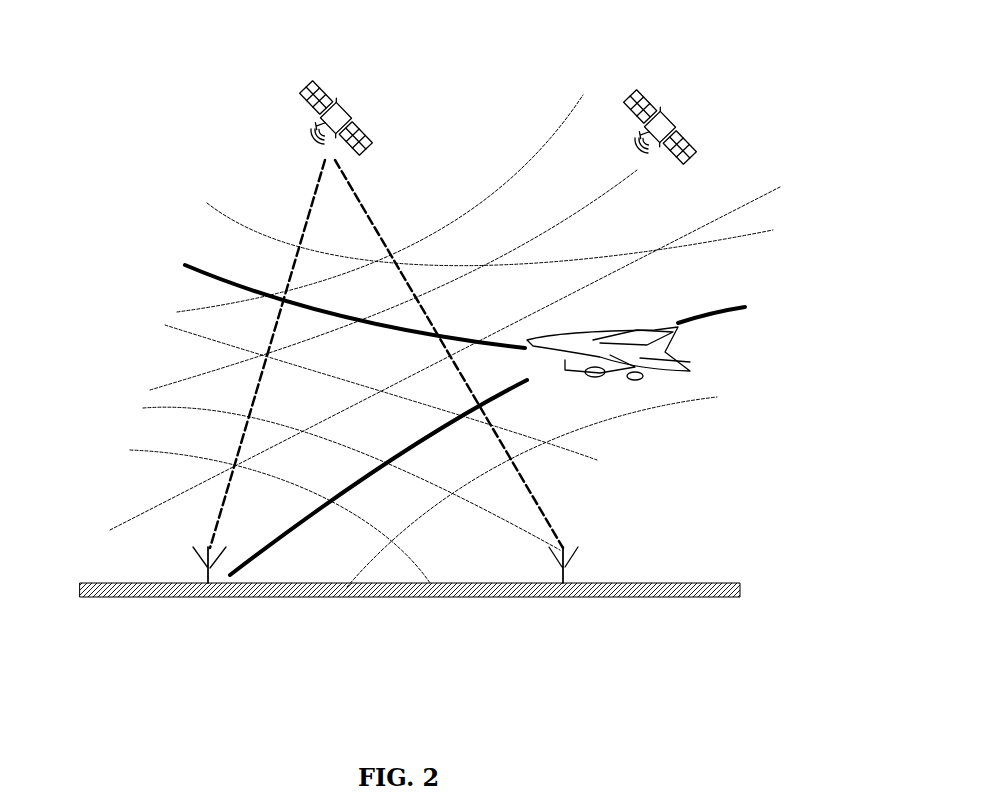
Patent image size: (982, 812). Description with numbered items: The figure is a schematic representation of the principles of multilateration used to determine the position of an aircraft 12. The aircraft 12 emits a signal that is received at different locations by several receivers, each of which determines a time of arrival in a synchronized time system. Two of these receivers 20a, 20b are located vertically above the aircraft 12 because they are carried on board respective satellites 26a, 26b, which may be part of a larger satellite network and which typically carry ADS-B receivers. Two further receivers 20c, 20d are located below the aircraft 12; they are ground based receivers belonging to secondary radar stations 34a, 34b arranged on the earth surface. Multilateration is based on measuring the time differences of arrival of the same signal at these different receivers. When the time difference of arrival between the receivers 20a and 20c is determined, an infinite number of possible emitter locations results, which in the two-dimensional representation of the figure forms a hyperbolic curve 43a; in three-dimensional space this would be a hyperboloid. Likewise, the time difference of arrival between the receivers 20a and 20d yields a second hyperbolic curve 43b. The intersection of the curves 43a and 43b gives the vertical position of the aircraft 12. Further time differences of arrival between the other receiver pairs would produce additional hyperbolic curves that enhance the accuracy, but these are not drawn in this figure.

The aircraft 12 is at (690, 371).
The receiver 20a is at (323, 152).
The receiver 20b is at (662, 152).
The receiver 20c is at (203, 585).
The receiver 20d is at (573, 583).
The satellite 26a is at (348, 104).
The satellite 26b is at (671, 114).
The secondary radar station 34a is at (197, 565).
The secondary radar station 34b is at (577, 563).
The hyperbolic curve 43a is at (203, 271).
The hyperbolic curve 43b is at (745, 307).